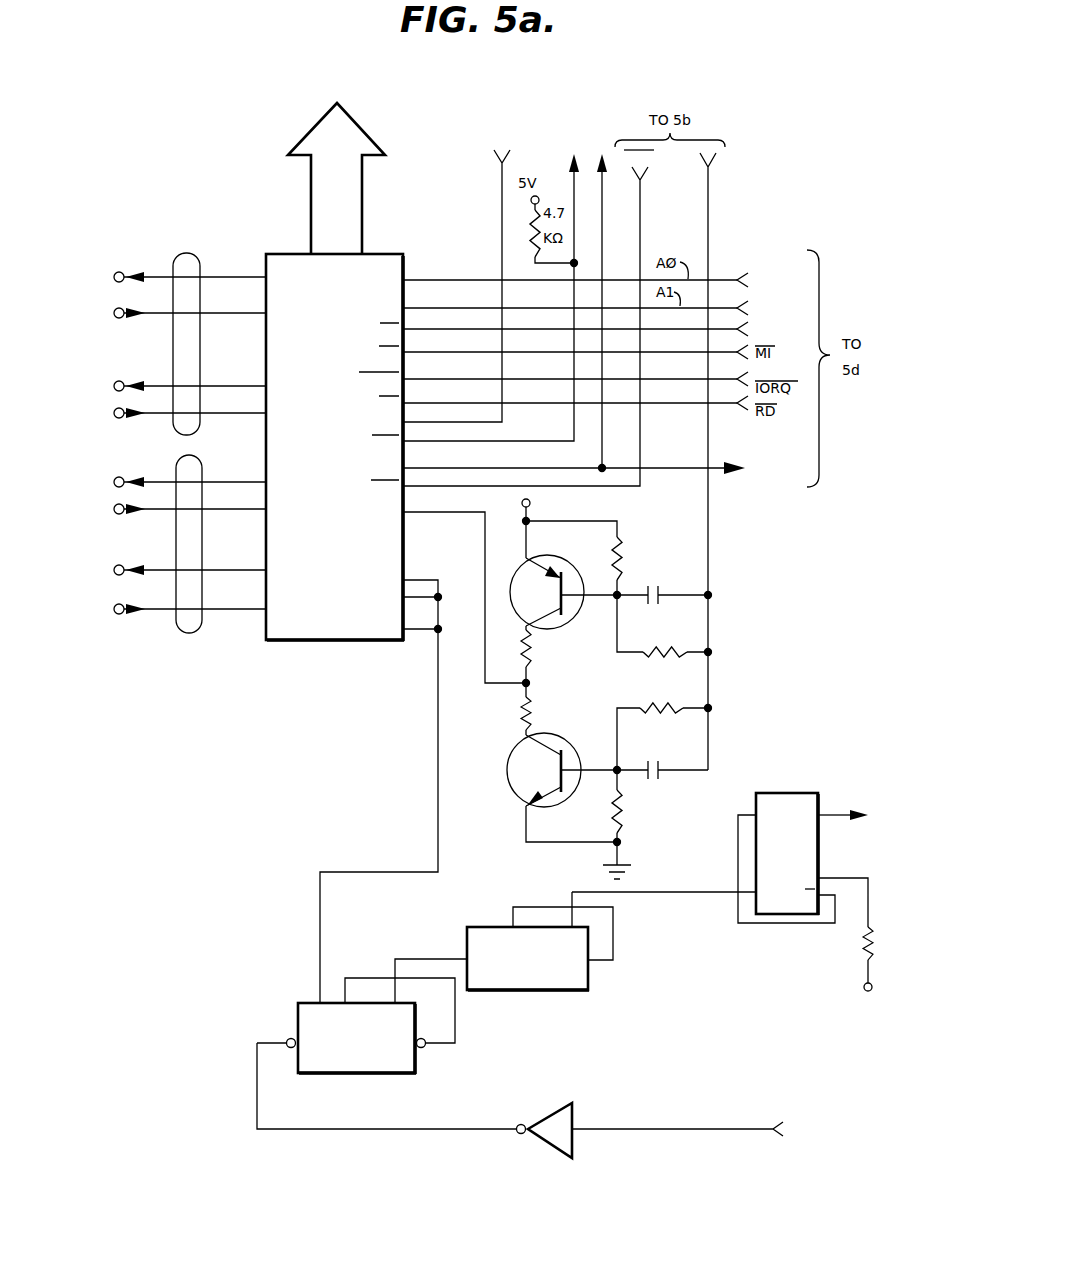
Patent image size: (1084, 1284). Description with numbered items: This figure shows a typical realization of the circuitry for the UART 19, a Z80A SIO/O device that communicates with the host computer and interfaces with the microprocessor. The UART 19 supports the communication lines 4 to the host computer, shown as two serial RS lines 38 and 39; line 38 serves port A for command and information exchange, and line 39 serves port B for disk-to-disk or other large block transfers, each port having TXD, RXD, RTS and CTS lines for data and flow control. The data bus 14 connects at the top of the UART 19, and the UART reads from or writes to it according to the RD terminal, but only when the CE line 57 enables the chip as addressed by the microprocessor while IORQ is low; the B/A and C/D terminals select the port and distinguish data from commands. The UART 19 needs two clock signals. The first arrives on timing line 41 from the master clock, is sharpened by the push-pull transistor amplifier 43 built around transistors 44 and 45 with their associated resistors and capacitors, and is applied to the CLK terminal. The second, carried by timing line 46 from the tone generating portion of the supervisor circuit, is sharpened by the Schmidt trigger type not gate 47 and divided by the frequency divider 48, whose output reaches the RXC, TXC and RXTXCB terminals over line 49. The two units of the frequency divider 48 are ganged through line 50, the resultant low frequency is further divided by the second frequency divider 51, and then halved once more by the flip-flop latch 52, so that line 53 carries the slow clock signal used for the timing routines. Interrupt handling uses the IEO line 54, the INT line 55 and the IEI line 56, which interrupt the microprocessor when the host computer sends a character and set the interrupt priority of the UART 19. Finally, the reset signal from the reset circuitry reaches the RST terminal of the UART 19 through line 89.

The communication lines 4 is at (131, 244).
The data bus 14 is at (355, 138).
The UART 19 is at (290, 641).
The RS 232-C line 38 is at (192, 254).
The RS 232-C line 39 is at (190, 634).
The timing line 41 is at (708, 236).
The push-pull transistor amplifier 43 is at (639, 687).
The transistor 44 is at (563, 560).
The transistor 45 is at (551, 806).
The timing line 46 is at (649, 1129).
The Schmidt trigger type not gate 47 is at (563, 1104).
The frequency divider 48 is at (302, 1016).
The line 49 is at (438, 793).
The line 50 is at (356, 976).
The second frequency divider 51 is at (475, 932).
The flip-flop latch 52 is at (787, 792).
The line 53 is at (833, 818).
The IEO line 54 is at (603, 208).
The INT line 55 is at (574, 247).
The IEI line 56 is at (502, 210).
The CE line 57 is at (682, 328).
The line 89 is at (640, 240).